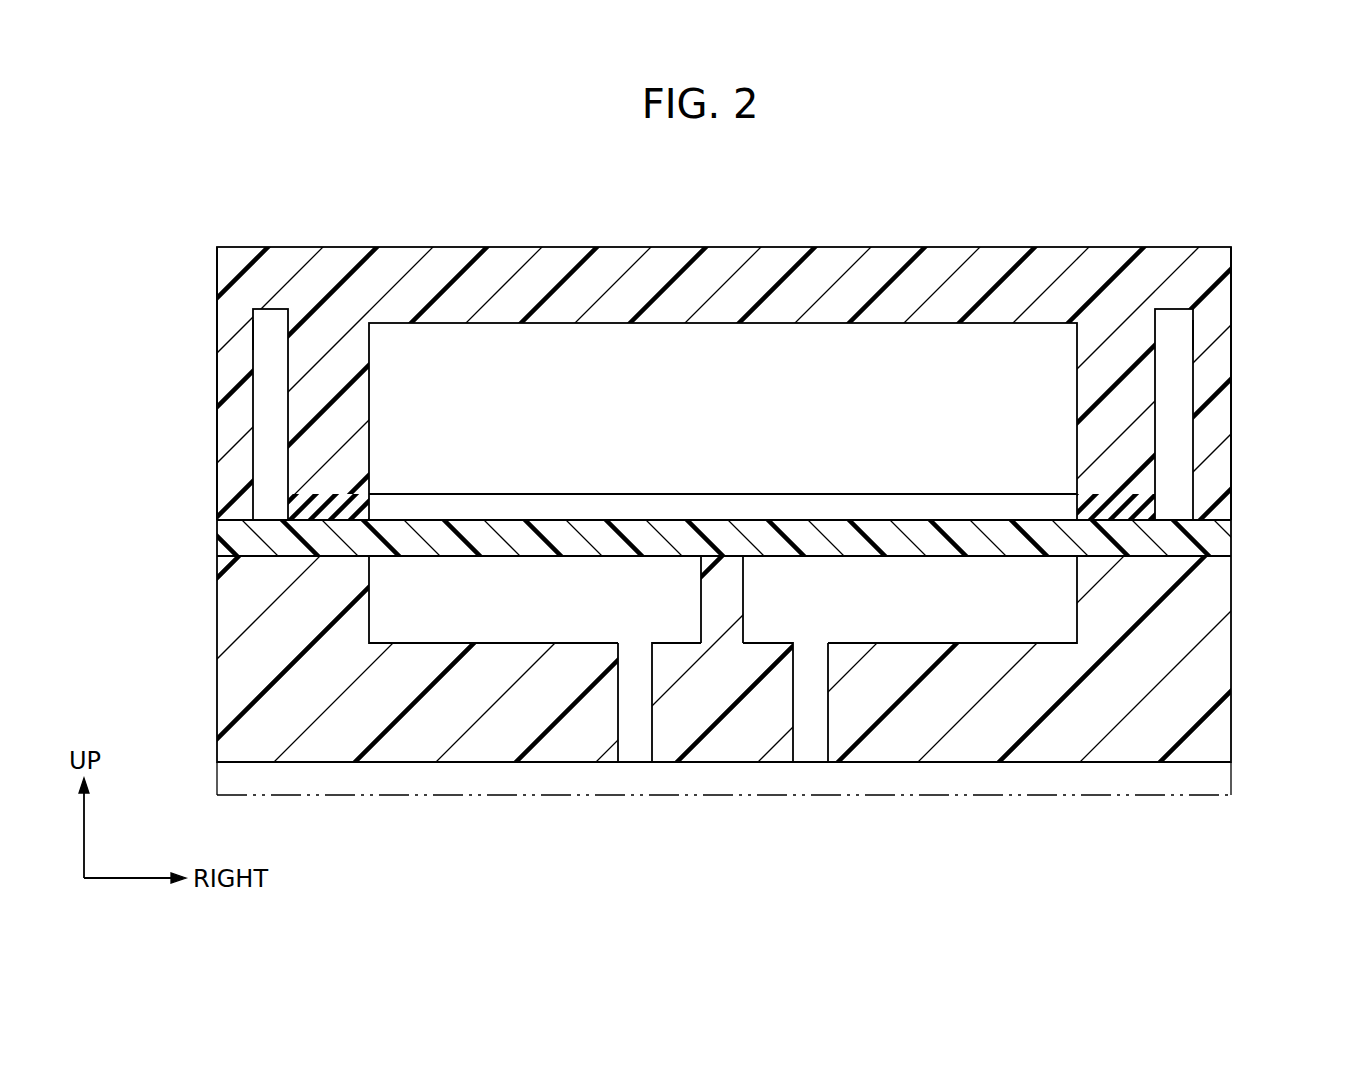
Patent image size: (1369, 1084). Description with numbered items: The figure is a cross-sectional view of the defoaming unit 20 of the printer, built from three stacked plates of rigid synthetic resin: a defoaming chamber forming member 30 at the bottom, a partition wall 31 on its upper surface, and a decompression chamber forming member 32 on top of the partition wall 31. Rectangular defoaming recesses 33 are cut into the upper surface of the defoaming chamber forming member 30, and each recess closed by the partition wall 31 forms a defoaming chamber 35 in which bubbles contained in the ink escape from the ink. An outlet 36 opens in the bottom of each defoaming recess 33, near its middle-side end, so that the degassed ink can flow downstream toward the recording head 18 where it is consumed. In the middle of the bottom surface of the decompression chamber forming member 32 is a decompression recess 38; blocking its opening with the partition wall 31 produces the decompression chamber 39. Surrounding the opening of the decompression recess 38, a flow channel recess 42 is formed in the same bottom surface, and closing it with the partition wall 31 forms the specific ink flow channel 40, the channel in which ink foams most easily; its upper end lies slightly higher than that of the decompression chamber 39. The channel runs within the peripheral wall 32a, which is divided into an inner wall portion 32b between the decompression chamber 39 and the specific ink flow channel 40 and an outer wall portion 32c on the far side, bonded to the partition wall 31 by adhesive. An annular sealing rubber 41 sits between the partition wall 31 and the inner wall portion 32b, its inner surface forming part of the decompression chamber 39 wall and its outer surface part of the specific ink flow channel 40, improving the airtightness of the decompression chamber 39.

The recording head 18 is at (882, 798).
The defoaming unit 20 is at (1201, 160).
The defoaming chamber forming member 30 is at (1225, 668).
The partition wall 31 is at (1225, 540).
The decompression chamber forming member 32 is at (1222, 362).
The peripheral wall 32a is at (127, 402).
The inner wall portion 32b is at (293, 411).
The outer wall portion 32c is at (222, 447).
The defoaming recess 33 is at (419, 643).
The defoaming chamber 35 is at (492, 630).
The outlet 36 is at (652, 746).
The decompression recess 38 is at (484, 328).
The decompression chamber 39 is at (935, 340).
The specific ink flow channel 40 is at (271, 318).
The sealing rubber 41 is at (1089, 492).
The flow channel recess 42 is at (252, 338).